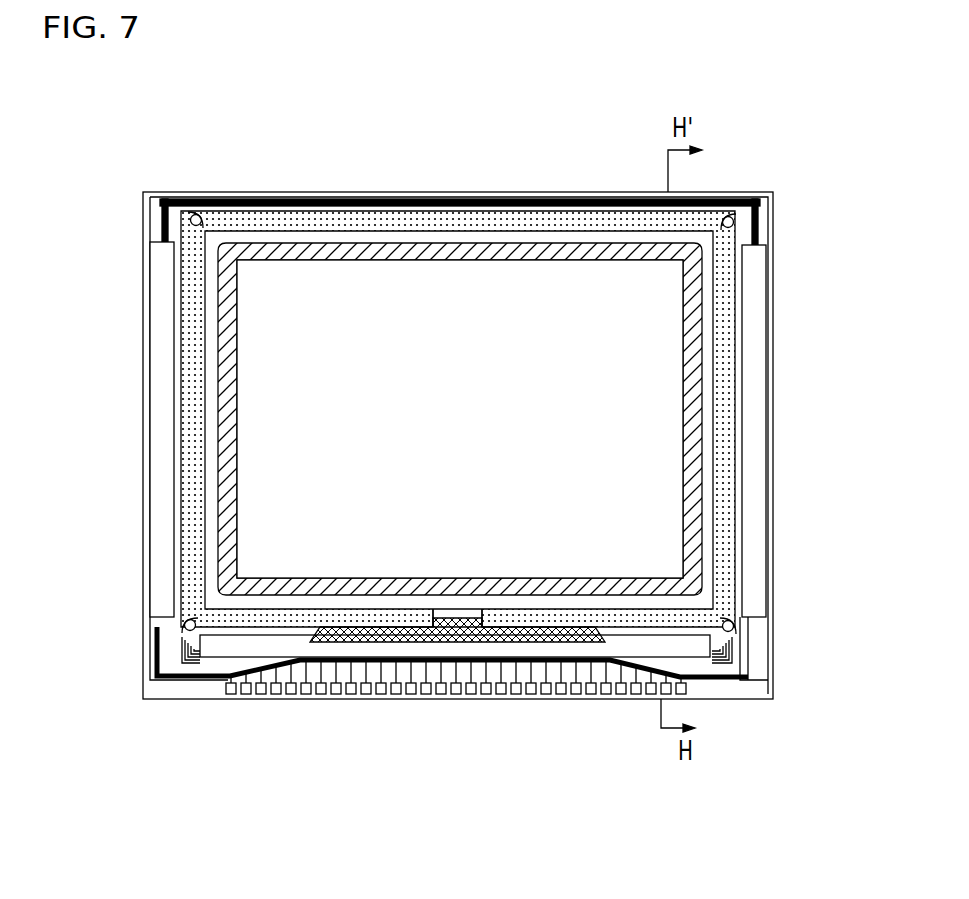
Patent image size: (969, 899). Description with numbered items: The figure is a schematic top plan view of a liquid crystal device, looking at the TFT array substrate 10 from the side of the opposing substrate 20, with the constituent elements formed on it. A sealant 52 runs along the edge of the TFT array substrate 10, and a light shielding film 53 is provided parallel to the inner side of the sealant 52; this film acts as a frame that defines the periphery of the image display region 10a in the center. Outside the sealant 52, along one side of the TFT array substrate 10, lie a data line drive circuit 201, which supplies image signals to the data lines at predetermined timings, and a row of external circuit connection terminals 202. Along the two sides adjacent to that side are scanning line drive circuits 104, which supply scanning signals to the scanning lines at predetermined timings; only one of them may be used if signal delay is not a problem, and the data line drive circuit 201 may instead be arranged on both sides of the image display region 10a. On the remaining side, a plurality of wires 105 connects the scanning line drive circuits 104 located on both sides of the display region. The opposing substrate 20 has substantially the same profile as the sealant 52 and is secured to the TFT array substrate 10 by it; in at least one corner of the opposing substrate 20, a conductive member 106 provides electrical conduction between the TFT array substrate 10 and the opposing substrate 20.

The TFT array substrate 10 is at (343, 193).
The image display region 10a is at (300, 308).
The opposing substrate 20 is at (437, 207).
The sealant 52 is at (722, 447).
The light shielding film 53 is at (700, 352).
The scanning line drive circuit 104 is at (158, 573).
The wires 105 is at (290, 200).
The conductive member 106 is at (200, 210).
The data line drive circuit 201 is at (240, 653).
The external circuit connection terminal 202 is at (628, 697).